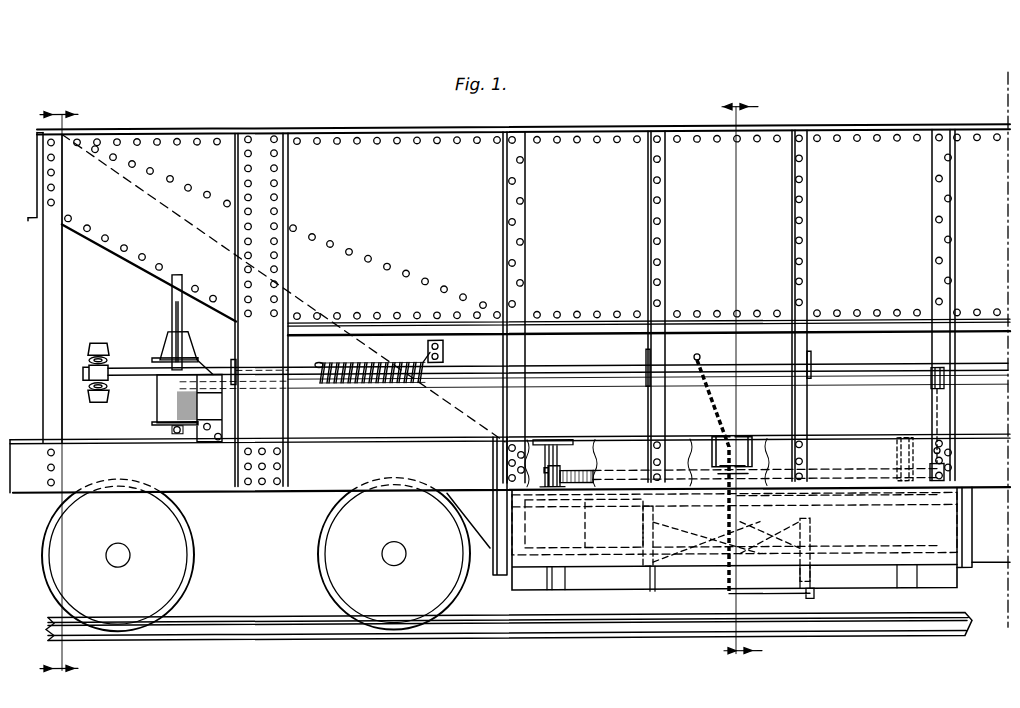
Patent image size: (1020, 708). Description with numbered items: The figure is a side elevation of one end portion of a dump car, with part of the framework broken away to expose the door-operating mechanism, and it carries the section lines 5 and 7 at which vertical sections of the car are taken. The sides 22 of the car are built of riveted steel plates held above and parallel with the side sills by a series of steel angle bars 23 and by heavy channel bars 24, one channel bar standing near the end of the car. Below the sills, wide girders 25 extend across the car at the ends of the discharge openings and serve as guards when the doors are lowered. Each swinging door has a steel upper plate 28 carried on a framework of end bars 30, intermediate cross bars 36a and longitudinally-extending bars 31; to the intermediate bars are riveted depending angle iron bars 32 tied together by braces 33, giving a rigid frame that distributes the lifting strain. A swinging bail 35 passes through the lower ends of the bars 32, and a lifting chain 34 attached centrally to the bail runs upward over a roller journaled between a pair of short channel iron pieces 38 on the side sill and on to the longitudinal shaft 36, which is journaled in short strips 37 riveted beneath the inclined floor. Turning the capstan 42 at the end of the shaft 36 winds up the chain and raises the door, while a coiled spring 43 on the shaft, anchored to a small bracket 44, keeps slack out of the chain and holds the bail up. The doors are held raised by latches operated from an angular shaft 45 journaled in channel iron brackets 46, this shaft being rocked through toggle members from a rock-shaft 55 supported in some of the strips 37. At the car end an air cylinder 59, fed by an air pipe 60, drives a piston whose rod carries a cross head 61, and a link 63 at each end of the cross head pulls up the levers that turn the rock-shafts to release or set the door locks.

The section line 5- 5 is at (742, 383).
The section line 7- 7 is at (59, 396).
The car sides 22 is at (884, 148).
The steel angle bars 23 is at (526, 300).
The channel bars 24 is at (282, 192).
The girders 25 is at (496, 572).
The door plate 28 is at (947, 530).
The end bars 30 is at (945, 512).
The longitudinally-extending bars 31 is at (585, 503).
The angle iron bars 32 is at (830, 536).
The braces 33 is at (795, 521).
The lifting chain 34 is at (722, 410).
The swinging bail 35 is at (814, 598).
The shaft 36 is at (550, 372).
The intermediate cross bars 36a is at (643, 518).
The strips 37 is at (232, 370).
The channel iron pieces 38 is at (714, 445).
The capstan 42 is at (96, 341).
The coiled spring 43 is at (395, 382).
The bracket 44 is at (445, 354).
The angular shaft 45 is at (592, 475).
The brackets 46 is at (565, 442).
The rock-shaft 55 is at (876, 386).
The air cylinder 59 is at (163, 400).
The air pipe 60 is at (176, 432).
The cross head 61 is at (178, 273).
The link 63 is at (180, 308).